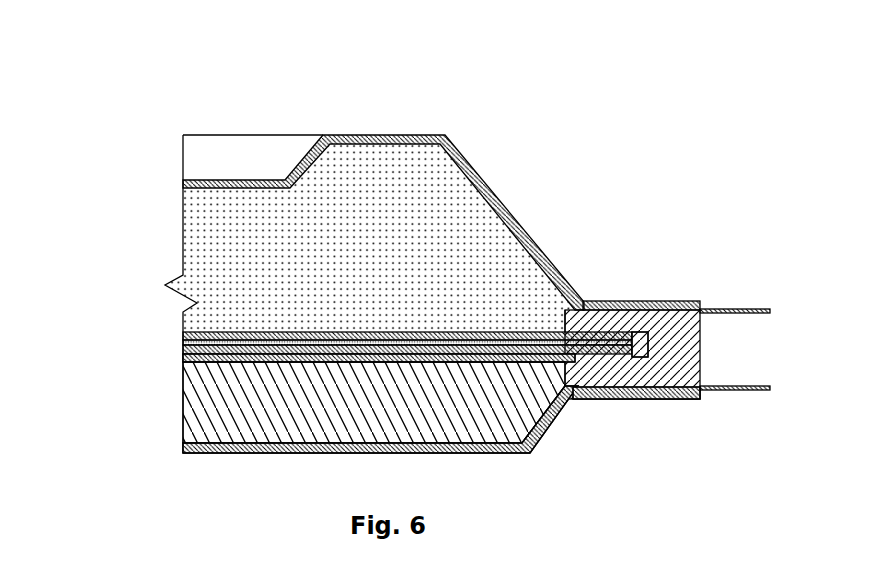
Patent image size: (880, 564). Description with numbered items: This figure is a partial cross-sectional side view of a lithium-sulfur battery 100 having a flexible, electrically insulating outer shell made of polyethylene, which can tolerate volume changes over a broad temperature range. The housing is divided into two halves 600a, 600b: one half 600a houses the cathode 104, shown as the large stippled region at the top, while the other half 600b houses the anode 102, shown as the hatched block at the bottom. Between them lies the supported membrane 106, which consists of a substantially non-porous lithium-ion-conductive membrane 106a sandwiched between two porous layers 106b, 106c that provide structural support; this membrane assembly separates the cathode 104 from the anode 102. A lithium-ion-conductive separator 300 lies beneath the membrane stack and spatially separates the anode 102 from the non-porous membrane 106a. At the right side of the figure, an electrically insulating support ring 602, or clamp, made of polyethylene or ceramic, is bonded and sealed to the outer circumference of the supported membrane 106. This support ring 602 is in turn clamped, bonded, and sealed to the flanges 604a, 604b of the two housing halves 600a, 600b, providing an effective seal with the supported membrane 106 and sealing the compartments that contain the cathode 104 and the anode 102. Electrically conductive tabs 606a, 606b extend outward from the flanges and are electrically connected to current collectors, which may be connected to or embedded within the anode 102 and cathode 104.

The lithium-sulfur battery 100 is at (528, 72).
The anode 102 is at (495, 410).
The cathode 104 is at (481, 232).
The supported membrane 106 is at (655, 345).
The substantially non-porous lithium-ion-conductive membrane 106a is at (183, 343).
The porous layer 106b is at (183, 336).
The porous layer 106c is at (183, 350).
The lithium-ion-conductive separator 300 is at (183, 358).
The housing half 600a is at (389, 135).
The housing half 600b is at (282, 454).
The support ring 602 is at (688, 337).
The flange 604a is at (633, 301).
The flange 604b is at (637, 400).
The electrically conductive tab 606a is at (740, 309).
The electrically conductive tab 606b is at (740, 392).